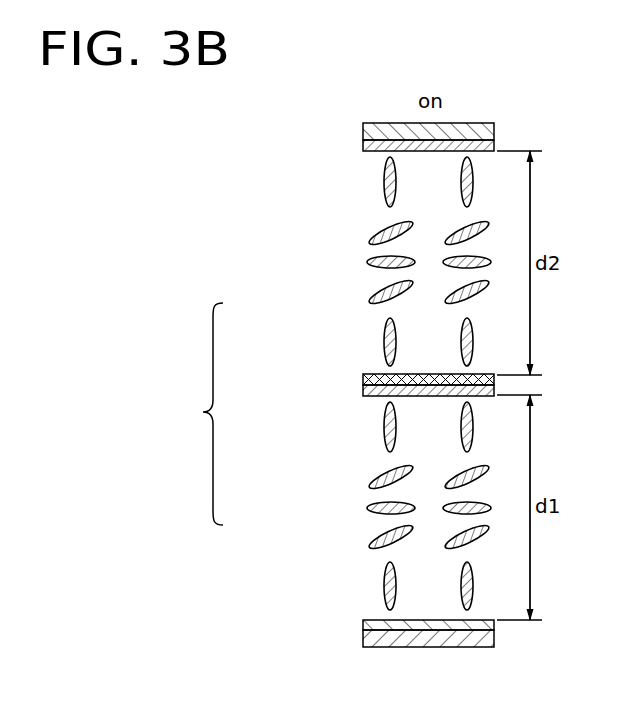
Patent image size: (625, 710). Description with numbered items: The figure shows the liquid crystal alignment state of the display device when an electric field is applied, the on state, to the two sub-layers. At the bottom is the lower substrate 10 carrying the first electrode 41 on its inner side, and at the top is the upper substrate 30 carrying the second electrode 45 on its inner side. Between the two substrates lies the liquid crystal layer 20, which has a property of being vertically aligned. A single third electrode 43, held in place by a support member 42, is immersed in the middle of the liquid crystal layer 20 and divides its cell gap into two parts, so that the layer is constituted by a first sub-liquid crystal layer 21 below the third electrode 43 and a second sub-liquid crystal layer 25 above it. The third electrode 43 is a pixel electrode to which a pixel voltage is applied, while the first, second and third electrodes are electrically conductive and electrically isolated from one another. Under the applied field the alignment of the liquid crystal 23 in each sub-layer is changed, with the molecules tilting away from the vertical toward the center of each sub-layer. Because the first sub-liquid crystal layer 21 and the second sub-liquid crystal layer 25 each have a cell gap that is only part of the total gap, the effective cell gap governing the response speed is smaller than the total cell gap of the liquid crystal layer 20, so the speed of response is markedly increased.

The lower substrate 10 is at (363, 634).
The first electrode 41 is at (363, 622).
The liquid crystal layer 20 is at (195, 414).
The first sub-liquid crystal layer 21 is at (443, 450).
The liquid crystal molecule 23 is at (368, 262).
The second sub-liquid crystal layer 25 is at (443, 207).
The support member 42 is at (363, 380).
The third electrode 43 is at (363, 390).
The second electrode 45 is at (363, 147).
The upper substrate 30 is at (363, 132).